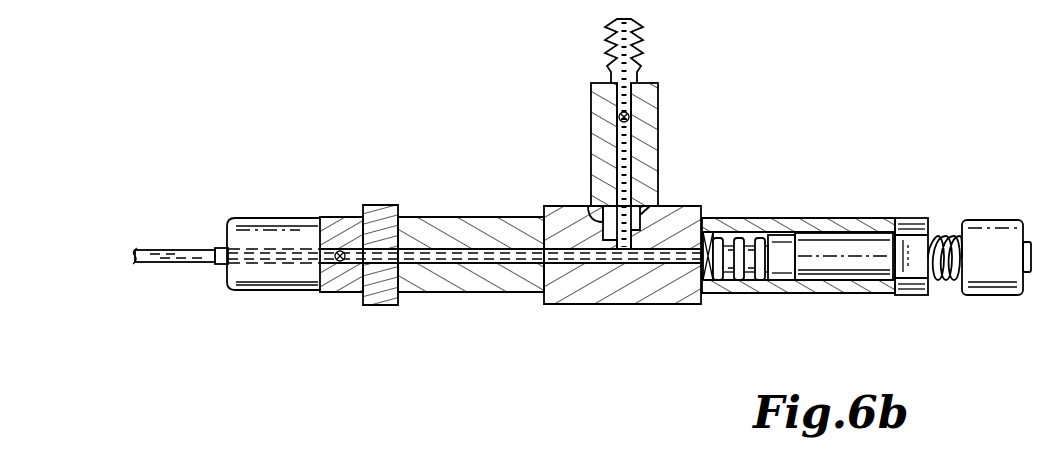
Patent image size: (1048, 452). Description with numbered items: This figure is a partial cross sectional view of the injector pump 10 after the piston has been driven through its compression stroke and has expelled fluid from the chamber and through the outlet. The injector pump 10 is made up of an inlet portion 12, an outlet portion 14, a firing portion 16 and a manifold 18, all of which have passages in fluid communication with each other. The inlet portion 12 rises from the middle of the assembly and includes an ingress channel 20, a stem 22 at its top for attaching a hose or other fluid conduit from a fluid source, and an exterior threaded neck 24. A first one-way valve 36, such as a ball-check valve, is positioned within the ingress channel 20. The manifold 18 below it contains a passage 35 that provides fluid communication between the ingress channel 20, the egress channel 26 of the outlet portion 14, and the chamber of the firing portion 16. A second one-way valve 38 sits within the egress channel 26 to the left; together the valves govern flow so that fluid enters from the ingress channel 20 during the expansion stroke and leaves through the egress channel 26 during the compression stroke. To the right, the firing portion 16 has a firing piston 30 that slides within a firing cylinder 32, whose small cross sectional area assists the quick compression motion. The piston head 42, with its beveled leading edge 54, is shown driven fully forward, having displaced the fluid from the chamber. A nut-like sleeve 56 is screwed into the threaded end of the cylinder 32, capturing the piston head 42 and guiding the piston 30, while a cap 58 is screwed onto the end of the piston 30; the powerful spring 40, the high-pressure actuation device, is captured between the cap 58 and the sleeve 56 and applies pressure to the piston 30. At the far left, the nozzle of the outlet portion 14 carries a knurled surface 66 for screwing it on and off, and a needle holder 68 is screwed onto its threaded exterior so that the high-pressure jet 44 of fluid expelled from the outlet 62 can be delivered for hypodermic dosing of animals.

The injector pump 10 is at (798, 126).
The inlet portion 12 is at (698, 98).
The outlet portion 14 is at (413, 176).
The firing portion 16 is at (894, 171).
The manifold 18 is at (676, 339).
The ingress channel 20 is at (607, 143).
The stem 22 is at (610, 65).
The exterior threaded neck 24 is at (590, 205).
The egress channel 26 is at (472, 247).
The firing piston 30 is at (862, 258).
The firing cylinder 32 is at (815, 218).
The passage 35 is at (622, 258).
The first one-way valve 36 is at (607, 107).
The second one-way valve 38 is at (340, 250).
The spring 40 is at (947, 283).
The piston head 42 is at (722, 240).
The high-pressure jet 44 is at (165, 250).
The beveled leading edge 54 is at (706, 296).
The nut-like sleeve 56 is at (912, 296).
The cap 58 is at (1002, 296).
The outlet 62 is at (222, 248).
The knurled surface 66 is at (345, 262).
The needle holder 68 is at (262, 218).